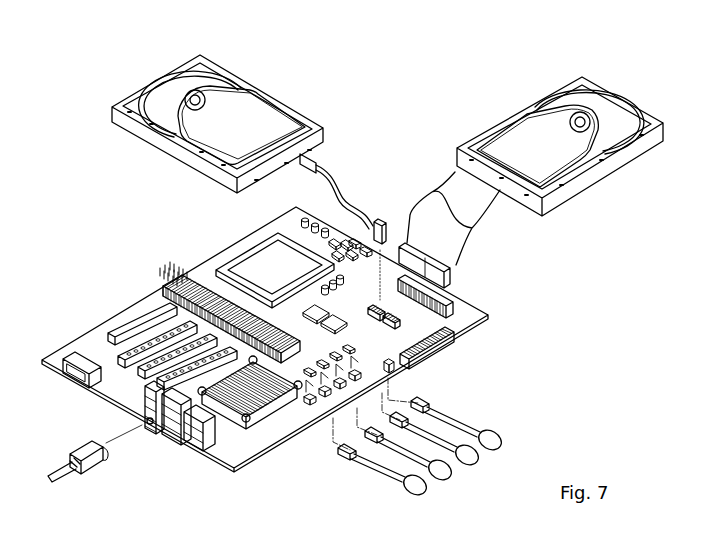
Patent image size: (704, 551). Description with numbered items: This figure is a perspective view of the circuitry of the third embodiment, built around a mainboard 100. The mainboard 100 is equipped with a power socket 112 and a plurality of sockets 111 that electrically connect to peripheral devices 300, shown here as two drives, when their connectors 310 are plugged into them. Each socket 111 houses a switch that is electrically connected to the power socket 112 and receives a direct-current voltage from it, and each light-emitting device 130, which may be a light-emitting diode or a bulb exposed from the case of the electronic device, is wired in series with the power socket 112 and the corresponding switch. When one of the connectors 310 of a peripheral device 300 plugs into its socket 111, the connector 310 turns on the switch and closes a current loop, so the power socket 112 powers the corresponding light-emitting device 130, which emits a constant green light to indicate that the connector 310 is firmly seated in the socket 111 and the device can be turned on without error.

The mainboard 100 is at (70, 333).
The sockets 111 is at (150, 412).
The power socket 112 is at (440, 342).
The light-emitting devices 130 is at (489, 430).
The peripheral devices 300 is at (290, 104).
The connectors 310 is at (381, 224).